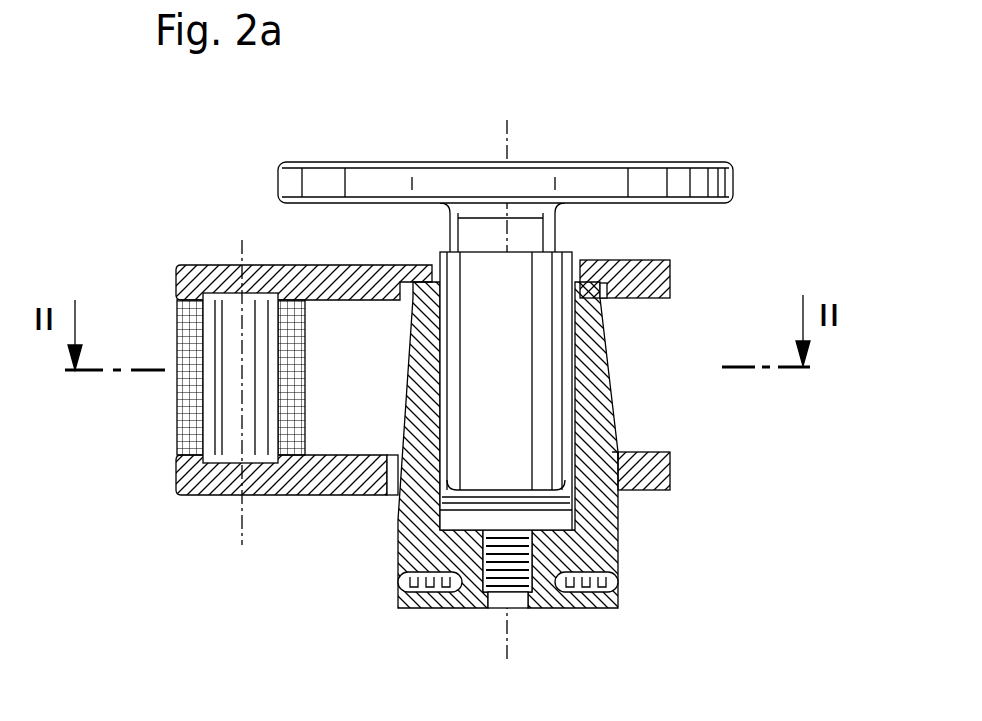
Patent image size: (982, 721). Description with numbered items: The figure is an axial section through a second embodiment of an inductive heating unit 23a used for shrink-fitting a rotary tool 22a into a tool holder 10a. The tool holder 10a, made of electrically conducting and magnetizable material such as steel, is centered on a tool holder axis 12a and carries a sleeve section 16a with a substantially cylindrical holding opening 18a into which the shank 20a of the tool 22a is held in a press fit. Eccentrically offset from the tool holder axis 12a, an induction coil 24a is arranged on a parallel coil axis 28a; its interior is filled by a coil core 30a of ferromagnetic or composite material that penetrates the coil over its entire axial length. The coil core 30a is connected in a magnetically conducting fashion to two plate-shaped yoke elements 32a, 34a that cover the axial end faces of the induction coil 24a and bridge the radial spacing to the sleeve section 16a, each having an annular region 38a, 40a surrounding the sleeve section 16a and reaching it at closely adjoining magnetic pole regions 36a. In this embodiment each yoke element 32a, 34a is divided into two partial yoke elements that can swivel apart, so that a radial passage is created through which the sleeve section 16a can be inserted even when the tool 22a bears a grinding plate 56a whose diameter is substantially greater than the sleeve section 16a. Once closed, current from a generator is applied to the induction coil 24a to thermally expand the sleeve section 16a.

The tool holder 10a is at (684, 599).
The tool holder axis 12a is at (510, 640).
The sleeve section 16a is at (509, 405).
The holding opening 18a is at (557, 374).
The shank 20a is at (460, 472).
The rotary tool 22a is at (557, 128).
The heating unit 23a is at (265, 374).
The induction coil 24a is at (190, 403).
The coil axis 28a is at (238, 528).
The coil core 30a is at (222, 447).
The yoke element 32a is at (303, 485).
The yoke element 34a is at (263, 265).
The magnetic pole regions 36a is at (603, 297).
The annular region 38a is at (640, 492).
The annular region 40a is at (645, 262).
The grinding plate 56a is at (720, 178).